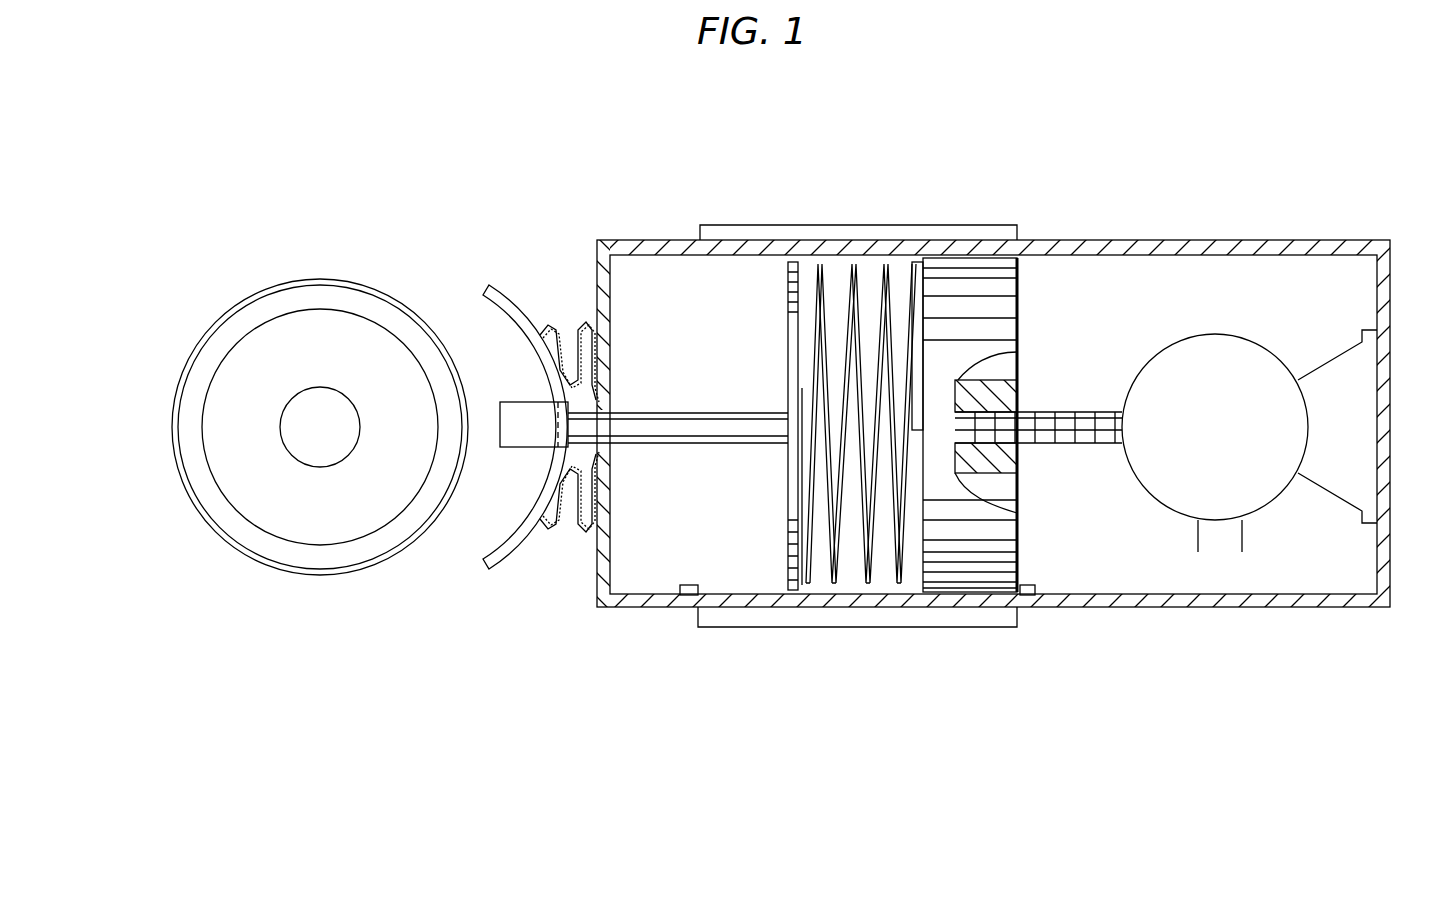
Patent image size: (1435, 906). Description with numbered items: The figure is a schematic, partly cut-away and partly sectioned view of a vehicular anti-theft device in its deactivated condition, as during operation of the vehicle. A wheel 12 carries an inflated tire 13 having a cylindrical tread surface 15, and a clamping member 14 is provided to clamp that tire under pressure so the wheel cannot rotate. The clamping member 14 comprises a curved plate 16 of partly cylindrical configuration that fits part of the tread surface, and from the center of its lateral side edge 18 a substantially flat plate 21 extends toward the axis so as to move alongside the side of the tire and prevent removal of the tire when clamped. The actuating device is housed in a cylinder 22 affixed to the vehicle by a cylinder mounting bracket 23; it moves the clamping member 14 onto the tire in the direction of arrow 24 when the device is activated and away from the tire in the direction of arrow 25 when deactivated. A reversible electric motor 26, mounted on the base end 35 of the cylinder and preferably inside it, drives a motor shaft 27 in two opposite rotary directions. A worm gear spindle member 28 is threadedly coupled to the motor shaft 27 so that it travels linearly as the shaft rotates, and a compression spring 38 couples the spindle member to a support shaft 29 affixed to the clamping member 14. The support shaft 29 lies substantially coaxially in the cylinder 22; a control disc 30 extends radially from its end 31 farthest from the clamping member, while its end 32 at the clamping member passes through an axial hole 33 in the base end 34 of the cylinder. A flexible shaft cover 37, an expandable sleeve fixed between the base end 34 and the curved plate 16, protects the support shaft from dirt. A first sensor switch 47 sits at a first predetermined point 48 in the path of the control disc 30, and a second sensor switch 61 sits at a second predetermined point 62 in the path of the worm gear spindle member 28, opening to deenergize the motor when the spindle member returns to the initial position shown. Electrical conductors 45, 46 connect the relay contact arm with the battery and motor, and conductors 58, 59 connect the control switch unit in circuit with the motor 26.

The wheel 12 is at (345, 455).
The tire 13 is at (318, 279).
The clamping member 14 is at (482, 550).
The cylindrical tread surface 15 is at (176, 430).
The curved plate 16 is at (524, 337).
The lateral side edge 18 is at (546, 488).
The flat plate 21 is at (512, 422).
The cylinder 22 is at (707, 193).
The cylinder mounting bracket 23 is at (780, 622).
The arrow 24 is at (536, 385).
The arrow 25 is at (544, 462).
The reversible electric motor 26 is at (1185, 350).
The motor shaft 27 is at (1108, 447).
The worm gear spindle member 28 is at (1012, 300).
The support shaft 29 is at (745, 445).
The control disc 30 is at (802, 262).
The end 31 is at (778, 414).
The end 32 is at (582, 427).
The axial hole 33 is at (612, 446).
The base end 34 is at (597, 258).
The base end 35 is at (1386, 422).
The flexible shaft cover 37 is at (556, 332).
The compression spring 38 is at (872, 270).
The electrical conductor 45 is at (1232, 313).
The electrical conductor 46 is at (1198, 545).
The first sensor switch 47 is at (686, 597).
The first predetermined point 48 is at (688, 597).
The electrical conductor 58 is at (1272, 333).
The electrical conductor 59 is at (1242, 545).
The second sensor switch 61 is at (1028, 608).
The second predetermined point 62 is at (1028, 597).